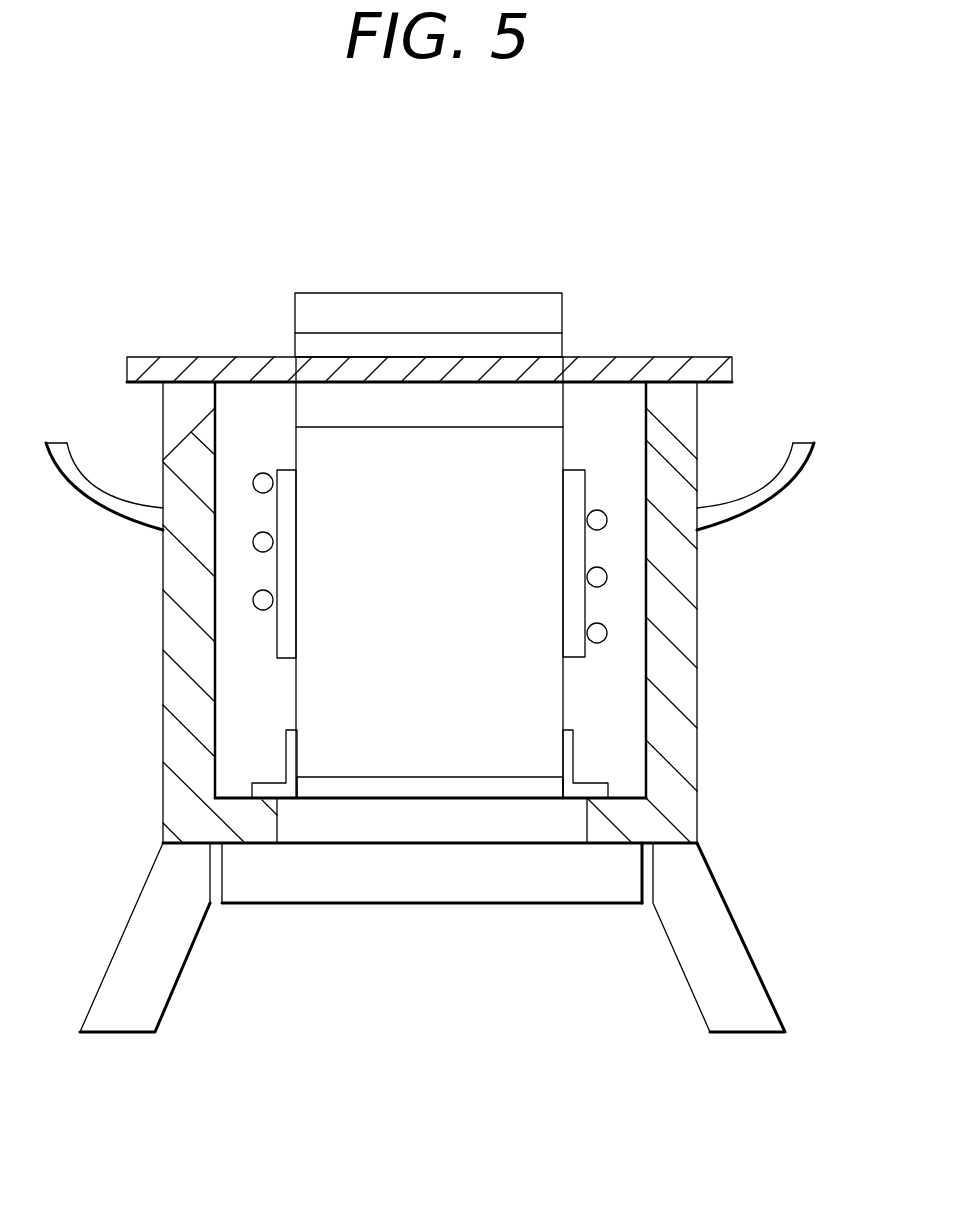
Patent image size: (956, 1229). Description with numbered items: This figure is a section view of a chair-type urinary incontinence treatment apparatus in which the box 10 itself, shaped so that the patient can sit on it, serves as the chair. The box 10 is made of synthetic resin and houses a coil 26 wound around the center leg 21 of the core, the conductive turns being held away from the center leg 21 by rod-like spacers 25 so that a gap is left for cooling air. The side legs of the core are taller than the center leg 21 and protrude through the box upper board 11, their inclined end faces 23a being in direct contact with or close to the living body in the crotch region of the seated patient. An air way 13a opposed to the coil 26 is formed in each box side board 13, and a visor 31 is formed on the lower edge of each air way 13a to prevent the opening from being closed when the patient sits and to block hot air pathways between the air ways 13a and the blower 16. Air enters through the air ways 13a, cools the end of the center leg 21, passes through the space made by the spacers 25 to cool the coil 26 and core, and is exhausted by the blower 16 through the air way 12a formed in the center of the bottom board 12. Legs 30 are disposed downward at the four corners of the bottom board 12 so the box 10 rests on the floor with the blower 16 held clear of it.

The box 10 is at (763, 666).
The box upper board 11 is at (673, 355).
The bottom board 12 is at (670, 843).
The air way 12a is at (585, 800).
The box side board 13 is at (680, 568).
The air way 13a is at (680, 408).
The blower 16 is at (368, 907).
The center leg 21 is at (460, 425).
The end faces 23a is at (398, 305).
The spacers 25 is at (273, 633).
The coil 26 is at (253, 542).
The legs 30 is at (743, 932).
The visors 31 is at (797, 482).